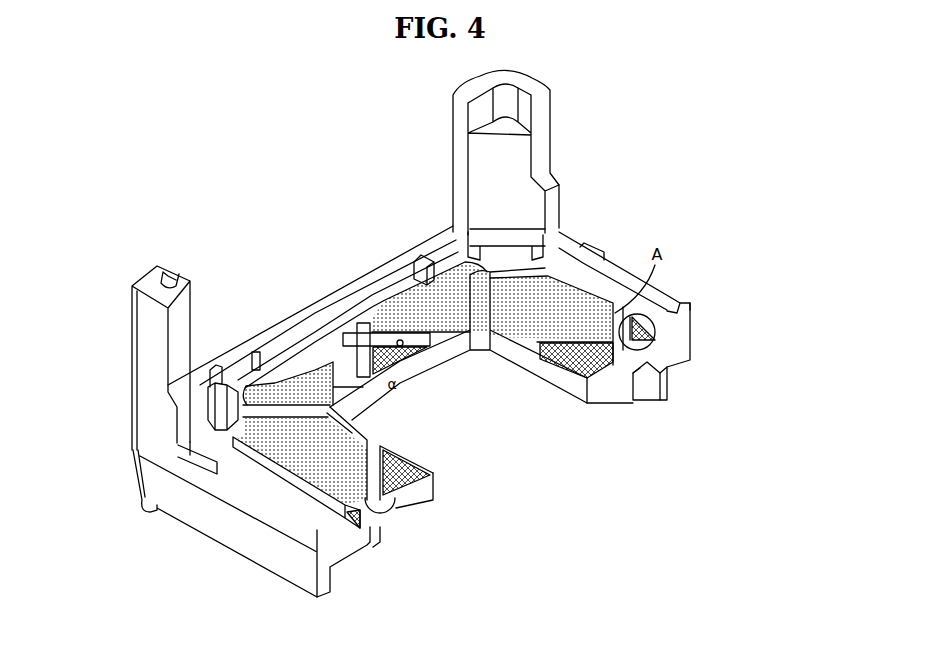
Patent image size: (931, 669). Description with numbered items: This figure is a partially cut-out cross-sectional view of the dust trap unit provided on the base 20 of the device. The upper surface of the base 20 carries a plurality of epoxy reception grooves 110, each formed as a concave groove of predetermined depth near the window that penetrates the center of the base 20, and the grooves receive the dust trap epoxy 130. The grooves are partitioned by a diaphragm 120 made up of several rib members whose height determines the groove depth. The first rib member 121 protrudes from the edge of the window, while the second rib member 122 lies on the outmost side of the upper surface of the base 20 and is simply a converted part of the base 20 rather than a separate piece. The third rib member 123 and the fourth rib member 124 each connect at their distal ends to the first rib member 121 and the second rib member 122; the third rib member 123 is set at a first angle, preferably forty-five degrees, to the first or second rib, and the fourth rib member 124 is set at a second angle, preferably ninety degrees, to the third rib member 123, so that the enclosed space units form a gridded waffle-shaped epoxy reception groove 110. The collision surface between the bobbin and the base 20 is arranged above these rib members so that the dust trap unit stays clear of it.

The base 20 is at (660, 357).
The epoxy reception groove 110 is at (628, 372).
The diaphragm 120 is at (410, 205).
The first rib member 121 is at (423, 343).
The second rib member 122 is at (416, 270).
The third rib member 123 is at (383, 335).
The fourth rib member 124 is at (305, 357).
The dust trap epoxy 130 is at (627, 385).